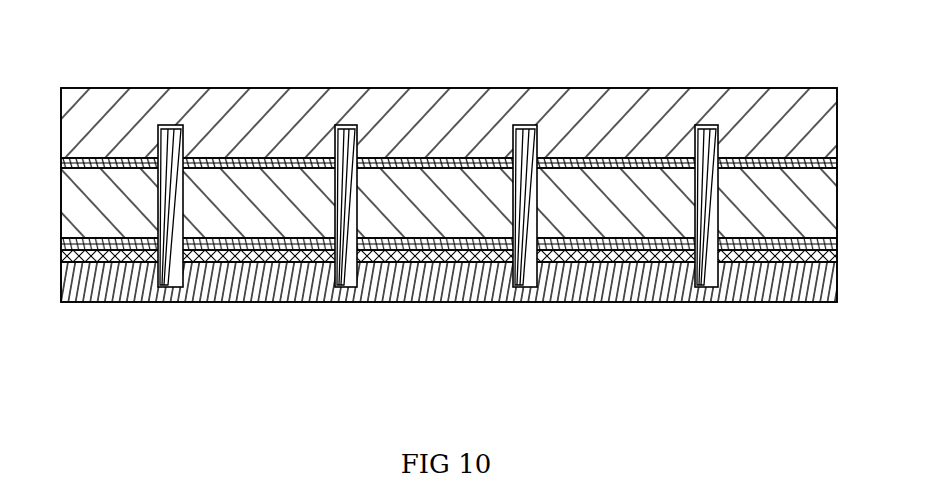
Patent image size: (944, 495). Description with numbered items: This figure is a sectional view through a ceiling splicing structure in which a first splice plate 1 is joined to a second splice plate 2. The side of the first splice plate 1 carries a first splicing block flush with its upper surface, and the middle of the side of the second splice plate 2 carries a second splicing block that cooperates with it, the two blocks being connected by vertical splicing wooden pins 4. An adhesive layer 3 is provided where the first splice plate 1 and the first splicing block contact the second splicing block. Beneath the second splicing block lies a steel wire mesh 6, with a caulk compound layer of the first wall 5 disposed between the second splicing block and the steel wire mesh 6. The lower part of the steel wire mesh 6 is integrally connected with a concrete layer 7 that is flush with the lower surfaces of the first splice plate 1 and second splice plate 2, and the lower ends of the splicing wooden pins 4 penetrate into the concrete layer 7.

The first splice plate 1 is at (438, 128).
The second splice plate 2 is at (643, 207).
The adhesive layer 3 is at (258, 167).
The splicing wooden pin 4 is at (347, 138).
The caulk compound layer of the first wall 5 is at (437, 246).
The steel wire mesh 6 is at (250, 263).
The concrete layer 7 is at (787, 277).